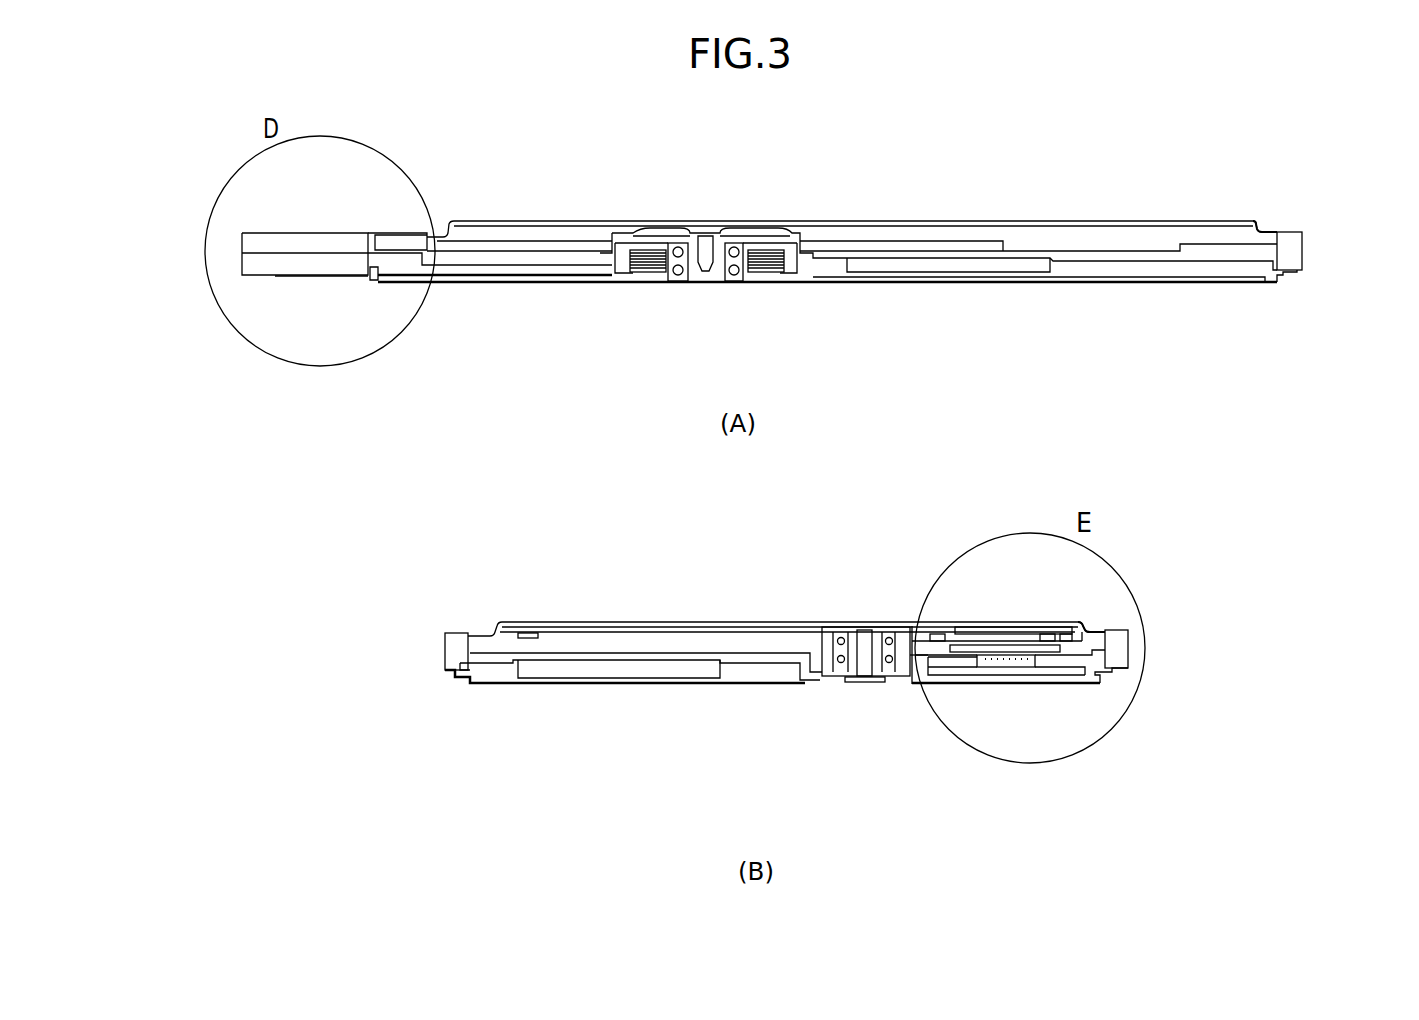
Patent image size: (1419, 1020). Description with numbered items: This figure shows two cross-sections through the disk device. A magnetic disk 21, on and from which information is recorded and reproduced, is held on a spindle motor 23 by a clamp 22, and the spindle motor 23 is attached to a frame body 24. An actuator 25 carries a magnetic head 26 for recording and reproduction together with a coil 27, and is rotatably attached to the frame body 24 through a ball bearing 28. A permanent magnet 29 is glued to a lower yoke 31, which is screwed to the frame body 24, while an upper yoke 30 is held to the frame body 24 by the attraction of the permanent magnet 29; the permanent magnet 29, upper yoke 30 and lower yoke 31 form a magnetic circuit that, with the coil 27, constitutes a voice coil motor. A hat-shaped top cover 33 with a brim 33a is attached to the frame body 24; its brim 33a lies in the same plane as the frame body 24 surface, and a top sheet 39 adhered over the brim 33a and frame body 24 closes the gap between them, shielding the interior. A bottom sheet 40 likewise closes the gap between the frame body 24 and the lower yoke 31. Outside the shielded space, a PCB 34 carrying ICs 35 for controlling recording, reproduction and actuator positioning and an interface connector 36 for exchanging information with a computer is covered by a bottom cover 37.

The magnetic disk 21 is at (537, 243).
The clamp 22 is at (685, 231).
The spindle motor 23 is at (715, 278).
The frame body 24 is at (1300, 247).
The actuator 25 is at (765, 627).
The magnetic head 26 is at (530, 632).
The coil 27 is at (933, 631).
The ball bearing 28 is at (845, 630).
The permanent magnet 29 is at (963, 648).
The upper yoke 30 is at (997, 627).
The lower yoke 31 is at (1000, 667).
The top cover 33 is at (612, 223).
The brim 33a is at (472, 633).
The PCB 34 is at (470, 277).
The ICs 35 is at (945, 270).
The interface connector 36 is at (303, 248).
The bottom cover 37 is at (580, 278).
The top sheet 39 is at (1275, 232).
The bottom sheet 40 is at (1087, 680).